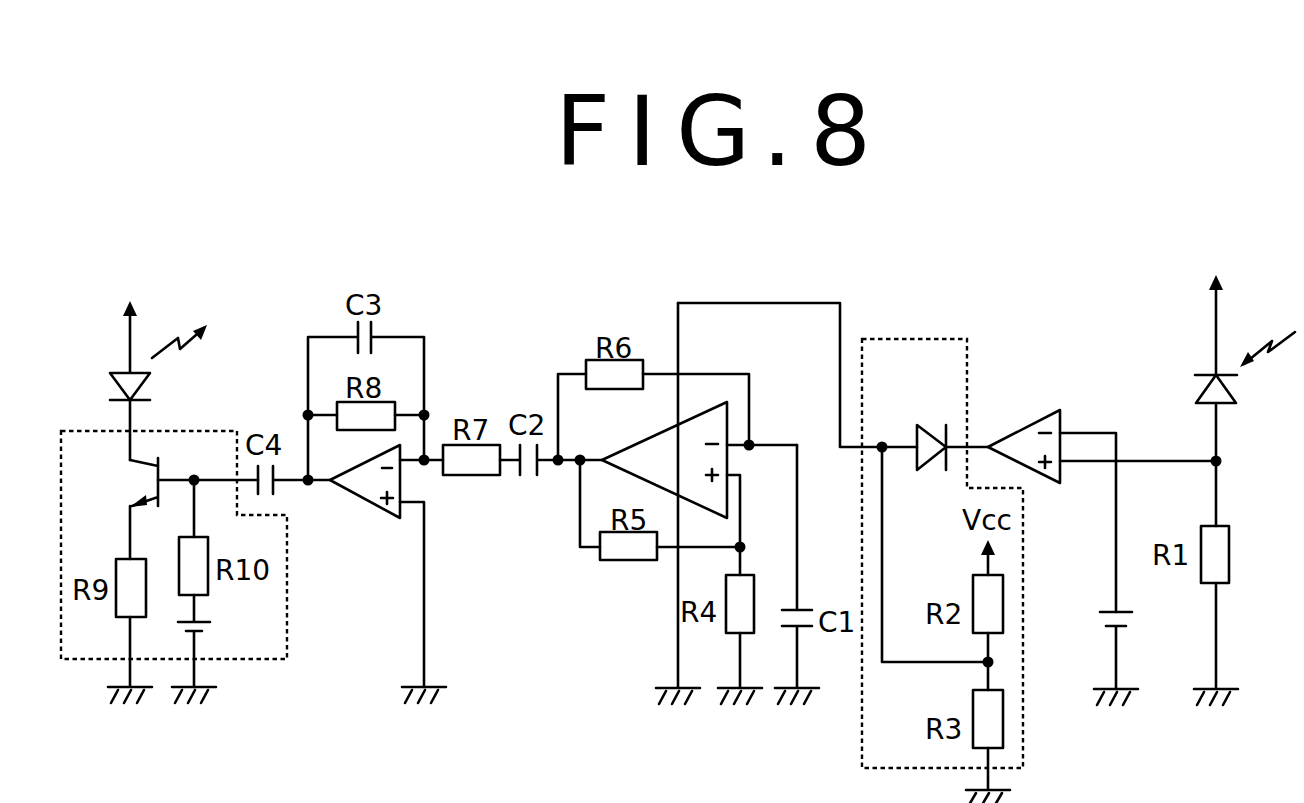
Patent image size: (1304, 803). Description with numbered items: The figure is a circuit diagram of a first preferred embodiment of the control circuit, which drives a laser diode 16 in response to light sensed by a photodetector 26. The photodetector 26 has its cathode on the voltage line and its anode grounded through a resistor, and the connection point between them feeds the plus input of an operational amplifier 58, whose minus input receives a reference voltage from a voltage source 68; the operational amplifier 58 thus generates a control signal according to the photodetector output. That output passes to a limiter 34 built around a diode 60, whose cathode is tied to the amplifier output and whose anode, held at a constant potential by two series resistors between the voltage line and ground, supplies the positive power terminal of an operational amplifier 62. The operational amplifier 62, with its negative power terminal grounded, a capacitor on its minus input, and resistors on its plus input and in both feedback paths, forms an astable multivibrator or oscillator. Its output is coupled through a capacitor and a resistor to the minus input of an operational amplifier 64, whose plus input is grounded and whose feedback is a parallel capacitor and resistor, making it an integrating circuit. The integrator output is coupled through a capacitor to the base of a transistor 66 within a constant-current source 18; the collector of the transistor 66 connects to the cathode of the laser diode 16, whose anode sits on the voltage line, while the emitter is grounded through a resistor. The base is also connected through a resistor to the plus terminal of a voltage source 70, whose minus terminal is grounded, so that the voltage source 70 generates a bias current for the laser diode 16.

The laser diode 16 is at (163, 388).
The constant-current source 18 is at (257, 661).
The photodetector 26 is at (1183, 392).
The limiter 34 is at (922, 338).
The operational amplifier 58 is at (1026, 425).
The diode 60 is at (929, 425).
The operational amplifier 62 is at (640, 439).
The operational amplifier 64 is at (363, 501).
The transistor 66 is at (130, 488).
The voltage source 68 is at (1135, 620).
The voltage source 70 is at (215, 628).